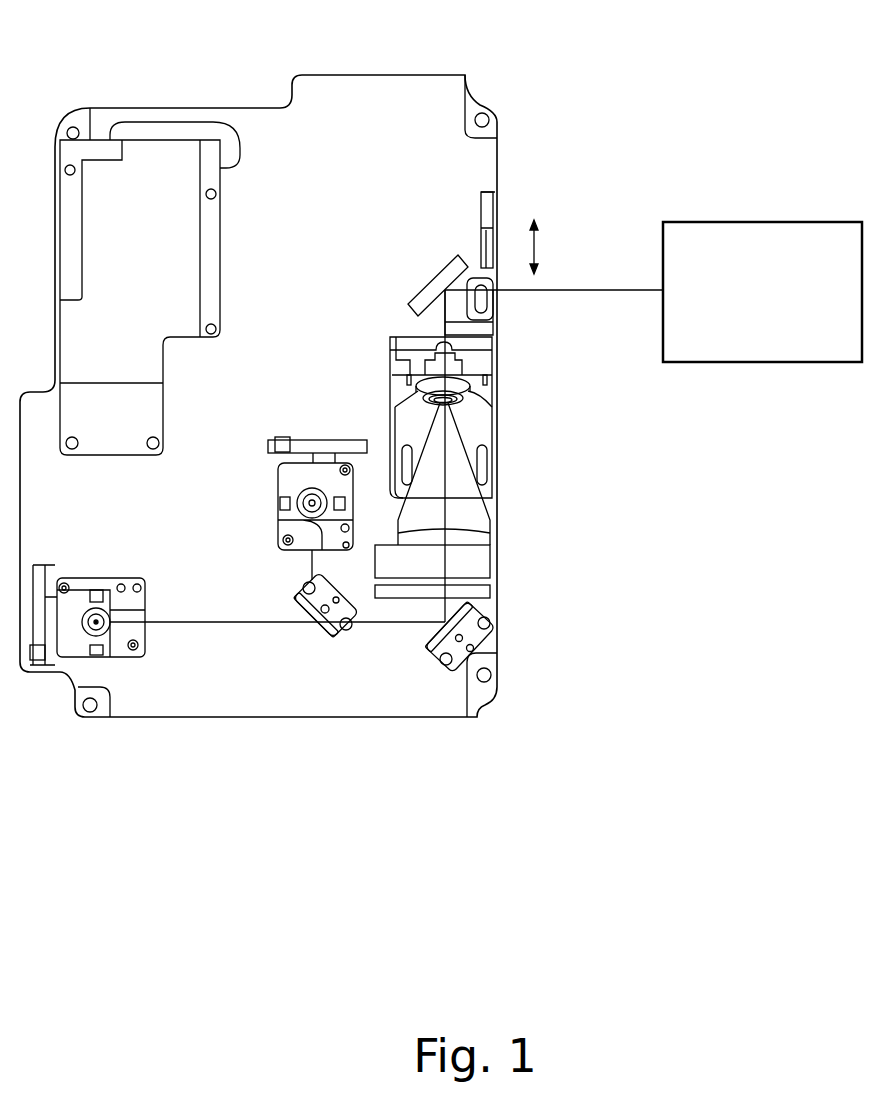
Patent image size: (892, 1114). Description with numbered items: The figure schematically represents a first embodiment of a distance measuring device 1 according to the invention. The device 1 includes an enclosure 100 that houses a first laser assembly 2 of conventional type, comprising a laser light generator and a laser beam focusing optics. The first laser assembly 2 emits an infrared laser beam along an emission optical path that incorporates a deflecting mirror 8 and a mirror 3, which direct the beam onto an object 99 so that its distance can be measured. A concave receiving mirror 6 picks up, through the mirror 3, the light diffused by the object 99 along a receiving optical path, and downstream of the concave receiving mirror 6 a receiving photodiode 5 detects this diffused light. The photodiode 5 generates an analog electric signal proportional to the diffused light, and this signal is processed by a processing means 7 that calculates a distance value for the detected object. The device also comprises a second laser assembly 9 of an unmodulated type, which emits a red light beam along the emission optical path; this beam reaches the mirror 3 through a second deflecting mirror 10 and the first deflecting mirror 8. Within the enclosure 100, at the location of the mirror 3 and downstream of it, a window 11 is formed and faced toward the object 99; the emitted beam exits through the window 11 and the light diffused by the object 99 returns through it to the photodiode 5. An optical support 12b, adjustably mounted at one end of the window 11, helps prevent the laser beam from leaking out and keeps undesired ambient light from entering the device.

The distance measuring device 1 is at (473, 784).
The enclosure 100 is at (358, 75).
The processing means 7 is at (141, 240).
The mirror 3 is at (432, 280).
The optical support 12b is at (493, 222).
The window 11 is at (497, 296).
The receiving photodiode 5 is at (468, 400).
The concave receiving mirror 6 is at (480, 557).
The deflecting mirror 8 is at (495, 640).
The first laser assembly 2 is at (108, 578).
The second laser assembly 9 is at (281, 482).
The second deflecting mirror 10 is at (292, 612).
The object 99 is at (746, 242).